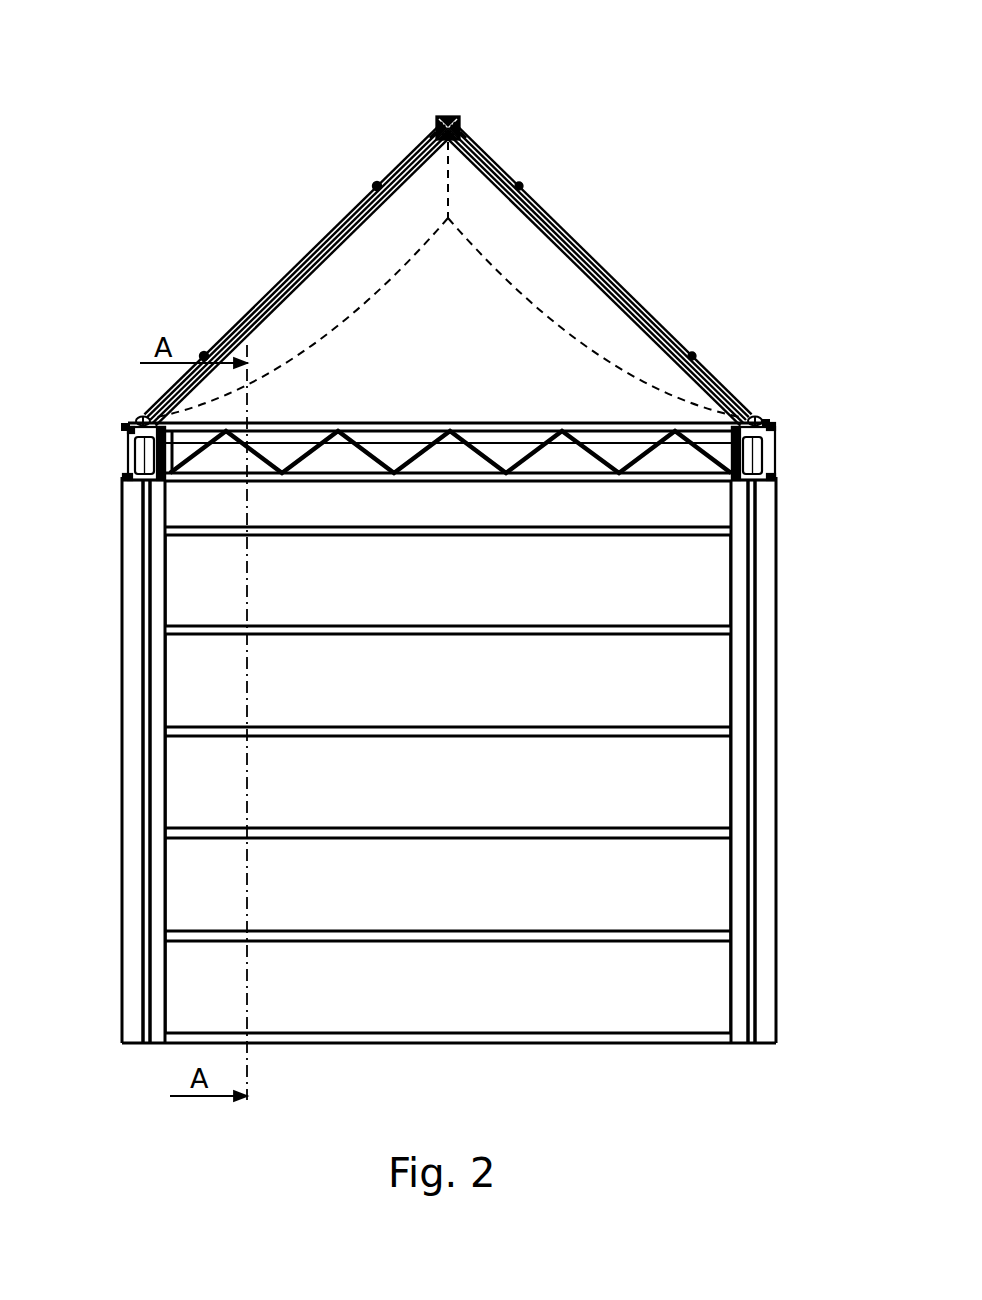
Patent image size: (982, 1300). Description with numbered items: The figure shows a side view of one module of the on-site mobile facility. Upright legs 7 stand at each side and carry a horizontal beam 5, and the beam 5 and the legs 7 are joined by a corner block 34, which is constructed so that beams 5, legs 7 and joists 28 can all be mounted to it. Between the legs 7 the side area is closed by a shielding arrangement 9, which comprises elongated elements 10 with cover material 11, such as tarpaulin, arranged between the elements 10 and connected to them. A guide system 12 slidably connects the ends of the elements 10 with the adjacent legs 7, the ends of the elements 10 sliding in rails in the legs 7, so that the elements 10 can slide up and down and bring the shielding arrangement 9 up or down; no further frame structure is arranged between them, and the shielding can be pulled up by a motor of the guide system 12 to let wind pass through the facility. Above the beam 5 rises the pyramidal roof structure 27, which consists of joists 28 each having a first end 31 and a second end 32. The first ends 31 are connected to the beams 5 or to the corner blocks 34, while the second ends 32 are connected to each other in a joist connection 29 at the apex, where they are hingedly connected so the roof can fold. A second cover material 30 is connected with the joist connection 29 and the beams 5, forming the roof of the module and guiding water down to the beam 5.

The beam 5 is at (128, 445).
The leg 7 is at (132, 792).
The shielding arrangement 9 is at (717, 594).
The elongated element 10 is at (717, 532).
The cover material 11 is at (717, 681).
The guide system 12 is at (765, 458).
The pyramidal roof structure 27 is at (587, 247).
The joist 28 is at (325, 238).
The joist connection 29 is at (448, 116).
The second cover material 30 is at (600, 353).
The first end 31 is at (147, 418).
The second end 32 is at (436, 128).
The corner block 34 is at (125, 427).